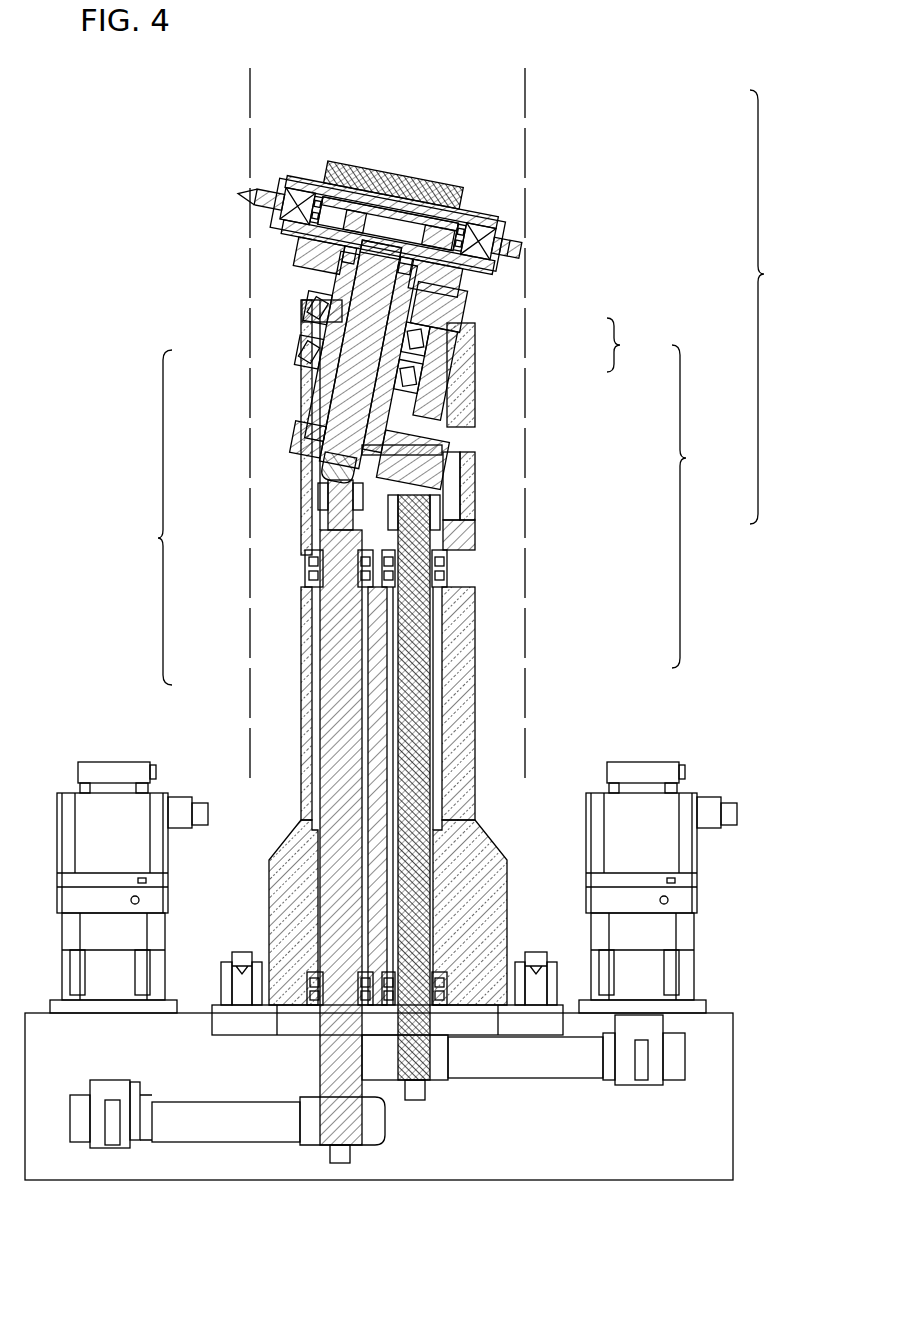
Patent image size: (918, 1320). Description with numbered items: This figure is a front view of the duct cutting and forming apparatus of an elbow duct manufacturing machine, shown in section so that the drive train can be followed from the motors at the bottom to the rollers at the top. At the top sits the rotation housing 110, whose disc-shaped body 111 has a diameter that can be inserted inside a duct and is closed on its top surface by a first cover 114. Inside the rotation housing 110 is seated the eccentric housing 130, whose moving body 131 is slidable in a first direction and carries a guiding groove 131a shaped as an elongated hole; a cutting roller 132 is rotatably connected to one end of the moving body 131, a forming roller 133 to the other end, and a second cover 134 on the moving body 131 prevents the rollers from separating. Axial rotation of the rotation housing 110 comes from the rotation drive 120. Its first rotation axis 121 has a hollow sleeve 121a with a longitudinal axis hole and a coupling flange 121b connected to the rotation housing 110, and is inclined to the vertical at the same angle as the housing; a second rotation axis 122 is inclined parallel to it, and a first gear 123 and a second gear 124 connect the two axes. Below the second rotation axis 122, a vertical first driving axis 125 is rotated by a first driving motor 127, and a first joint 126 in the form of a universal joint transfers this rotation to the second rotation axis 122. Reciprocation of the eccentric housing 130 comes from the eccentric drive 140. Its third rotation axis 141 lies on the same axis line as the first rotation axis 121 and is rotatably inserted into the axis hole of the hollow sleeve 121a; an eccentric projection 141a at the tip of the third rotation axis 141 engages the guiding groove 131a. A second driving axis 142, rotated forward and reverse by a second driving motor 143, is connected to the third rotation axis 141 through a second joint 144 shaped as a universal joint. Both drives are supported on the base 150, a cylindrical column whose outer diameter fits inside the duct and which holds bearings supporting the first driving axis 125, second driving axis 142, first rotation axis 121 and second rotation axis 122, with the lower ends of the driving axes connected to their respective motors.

The rotation housing 110 is at (277, 220).
The disc-shaped body 111 is at (313, 238).
The first cover 114 is at (325, 165).
The rotation drive 120 is at (506, 663).
The first rotation axis 121 is at (528, 342).
The hollow sleeve 121a is at (458, 293).
The coupling flange 121b is at (470, 333).
The second rotation axis 122 is at (470, 367).
The first gear 123 is at (472, 395).
The second gear 124 is at (472, 423).
The first driving axis 125 is at (425, 632).
The first joint 126 is at (473, 467).
The first driving motor 127 is at (640, 775).
The eccentric housing 130 is at (439, 274).
The moving body 131 is at (502, 265).
The guiding groove 131a is at (372, 245).
The cutting roller 132 is at (358, 172).
The forming roller 133 is at (516, 226).
The second cover 134 is at (485, 210).
The eccentric drive 140 is at (226, 677).
The third rotation axis 141 is at (363, 335).
The eccentric projection 141a is at (397, 247).
The second driving axis 142 is at (333, 622).
The second driving motor 143 is at (120, 773).
The second joint 144 is at (330, 452).
The base 150 is at (478, 880).